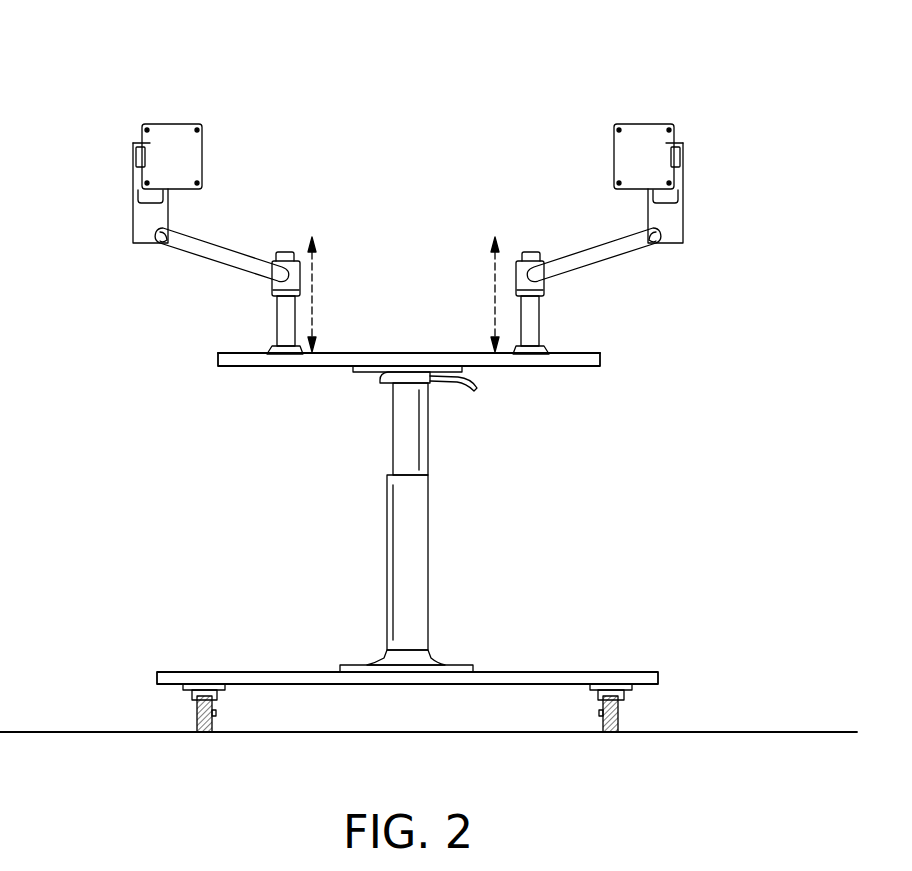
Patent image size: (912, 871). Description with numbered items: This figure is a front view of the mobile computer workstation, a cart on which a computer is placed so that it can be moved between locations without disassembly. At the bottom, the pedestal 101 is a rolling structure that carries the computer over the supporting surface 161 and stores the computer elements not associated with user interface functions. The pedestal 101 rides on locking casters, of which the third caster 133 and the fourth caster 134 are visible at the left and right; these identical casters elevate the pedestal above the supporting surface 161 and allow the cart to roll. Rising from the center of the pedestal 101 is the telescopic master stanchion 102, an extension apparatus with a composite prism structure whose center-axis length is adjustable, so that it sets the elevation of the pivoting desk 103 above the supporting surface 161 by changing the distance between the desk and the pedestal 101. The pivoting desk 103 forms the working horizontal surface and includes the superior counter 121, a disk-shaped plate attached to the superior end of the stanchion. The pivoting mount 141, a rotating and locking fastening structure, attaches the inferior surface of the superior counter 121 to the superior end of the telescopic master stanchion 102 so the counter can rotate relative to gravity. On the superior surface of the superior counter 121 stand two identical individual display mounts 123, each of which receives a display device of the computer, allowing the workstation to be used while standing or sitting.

The individual display mount 123 is at (584, 245).
The superior counter 121 is at (587, 353).
The pivoting desk 103 is at (409, 352).
The pivoting mount 141 is at (432, 380).
The telescopic master stanchion 102 is at (428, 521).
The pedestal 101 is at (590, 668).
The third caster 133 is at (193, 715).
The fourth caster 134 is at (622, 725).
The supporting surface 161 is at (817, 731).